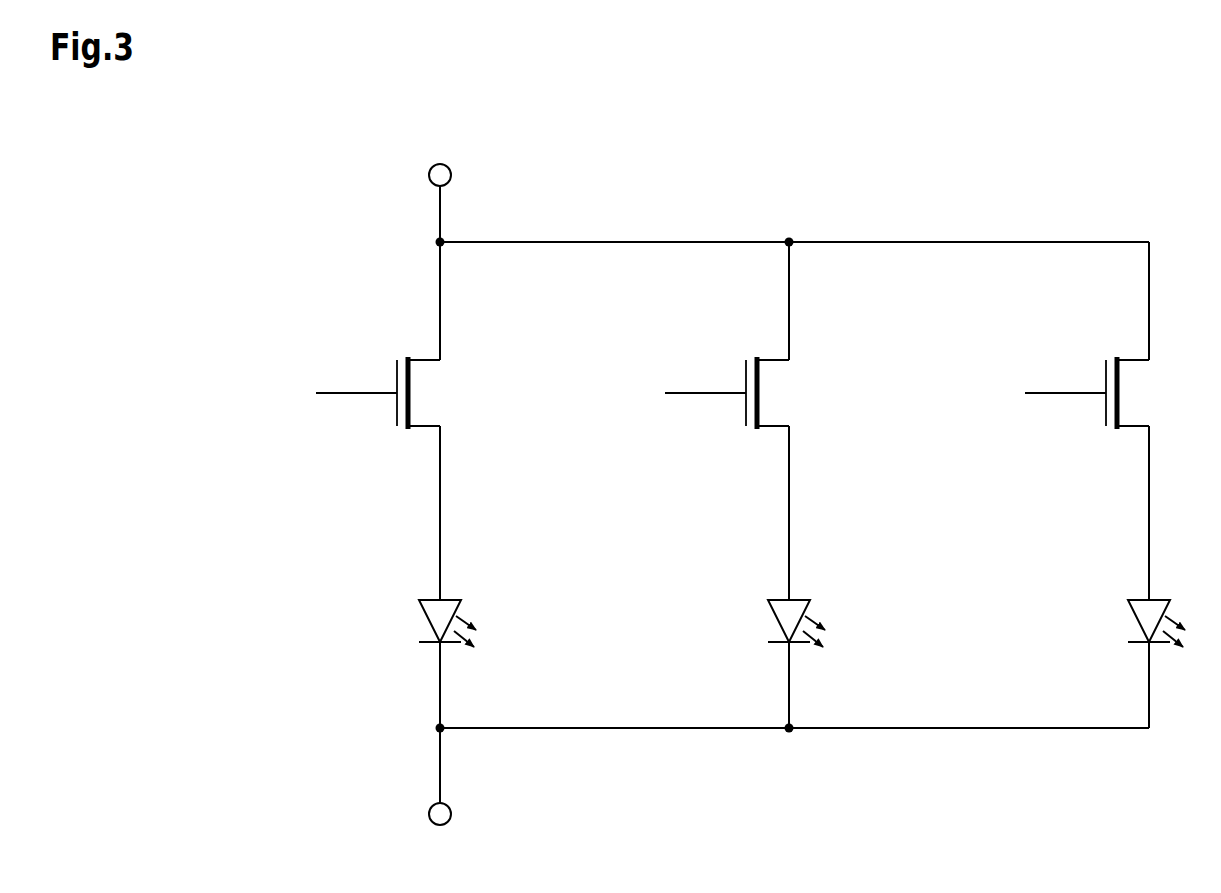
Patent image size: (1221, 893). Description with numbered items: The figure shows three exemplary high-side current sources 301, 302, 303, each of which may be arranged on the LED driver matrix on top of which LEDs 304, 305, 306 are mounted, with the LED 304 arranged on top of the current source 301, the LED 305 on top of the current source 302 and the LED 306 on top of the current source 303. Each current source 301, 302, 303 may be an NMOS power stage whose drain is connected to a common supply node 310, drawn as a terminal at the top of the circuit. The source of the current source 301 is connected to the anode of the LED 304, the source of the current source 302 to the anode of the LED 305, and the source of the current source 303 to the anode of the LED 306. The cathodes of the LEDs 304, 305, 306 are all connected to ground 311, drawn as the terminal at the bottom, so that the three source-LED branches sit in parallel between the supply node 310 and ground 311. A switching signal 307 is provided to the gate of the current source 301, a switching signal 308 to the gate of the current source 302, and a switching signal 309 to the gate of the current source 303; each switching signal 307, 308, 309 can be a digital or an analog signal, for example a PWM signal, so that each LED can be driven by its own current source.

The current source 301 is at (428, 393).
The current source 302 is at (777, 393).
The current source 303 is at (1137, 393).
The LED 304 is at (423, 623).
The LED 305 is at (771, 623).
The LED 306 is at (1132, 623).
The switching signal 307 is at (348, 376).
The switching signal 308 is at (700, 376).
The switching signal 309 is at (1059, 376).
The supply node 310 is at (440, 184).
The ground 311 is at (443, 796).